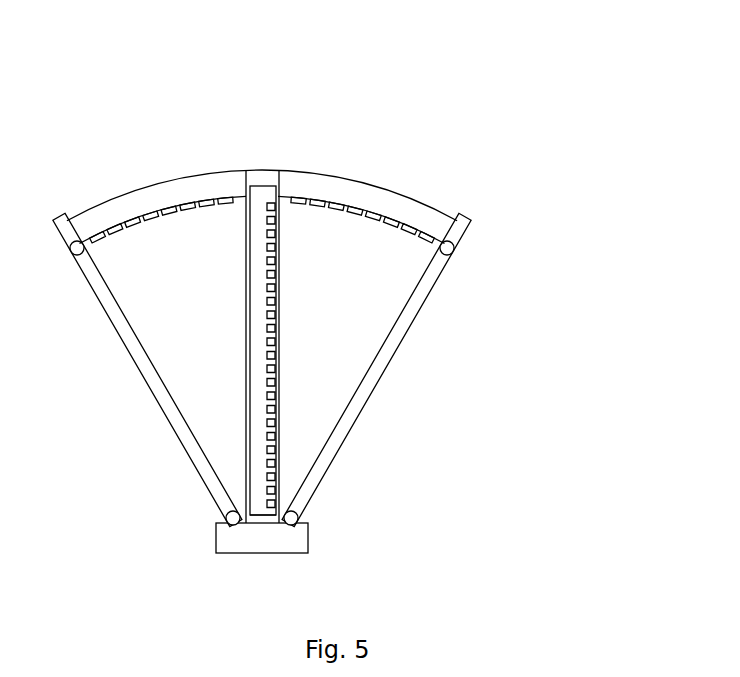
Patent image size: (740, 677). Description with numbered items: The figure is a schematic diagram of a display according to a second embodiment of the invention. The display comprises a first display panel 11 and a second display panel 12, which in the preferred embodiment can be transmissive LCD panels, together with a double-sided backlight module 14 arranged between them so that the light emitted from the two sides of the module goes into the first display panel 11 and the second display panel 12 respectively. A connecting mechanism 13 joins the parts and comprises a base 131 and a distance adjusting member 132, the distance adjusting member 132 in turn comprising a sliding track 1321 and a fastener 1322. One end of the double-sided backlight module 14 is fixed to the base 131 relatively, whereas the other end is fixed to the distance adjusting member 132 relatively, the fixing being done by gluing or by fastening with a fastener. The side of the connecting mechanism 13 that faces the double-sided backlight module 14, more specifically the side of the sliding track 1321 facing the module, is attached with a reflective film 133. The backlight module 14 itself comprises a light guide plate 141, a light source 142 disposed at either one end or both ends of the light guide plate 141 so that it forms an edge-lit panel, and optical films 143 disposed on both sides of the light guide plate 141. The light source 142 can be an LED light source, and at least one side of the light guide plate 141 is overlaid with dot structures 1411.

The first display panel 11 is at (135, 367).
The second display panel 12 is at (385, 355).
The connecting mechanism 13 is at (289, 405).
The base 131 is at (247, 538).
The distance adjusting member 132 is at (355, 158).
The sliding track 1321 is at (398, 207).
The fastener 1322 is at (420, 224).
The reflective film 133 is at (182, 205).
The double-sided backlight module 14 is at (299, 261).
The light guide plate 141 is at (257, 262).
The dot structures 1411 is at (267, 262).
The light source 142 is at (257, 513).
The optical films 143 is at (248, 235).